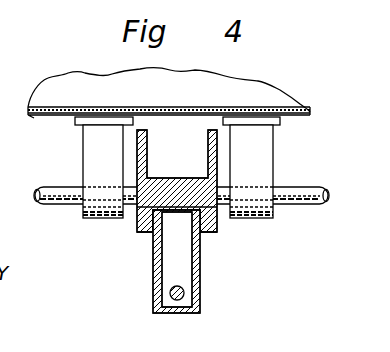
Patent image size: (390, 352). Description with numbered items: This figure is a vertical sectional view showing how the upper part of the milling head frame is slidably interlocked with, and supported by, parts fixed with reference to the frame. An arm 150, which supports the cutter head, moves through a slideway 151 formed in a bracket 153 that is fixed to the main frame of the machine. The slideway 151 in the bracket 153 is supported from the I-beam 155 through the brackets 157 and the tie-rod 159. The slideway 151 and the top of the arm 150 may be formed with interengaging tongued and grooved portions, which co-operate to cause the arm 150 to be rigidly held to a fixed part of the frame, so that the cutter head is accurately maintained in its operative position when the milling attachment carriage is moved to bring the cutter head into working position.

The arm 150 is at (198, 287).
The slideway 151 is at (198, 233).
The bracket 153 is at (142, 210).
The I-beam 155 is at (42, 114).
The brackets 157 is at (82, 160).
The tie-rod 159 is at (62, 207).